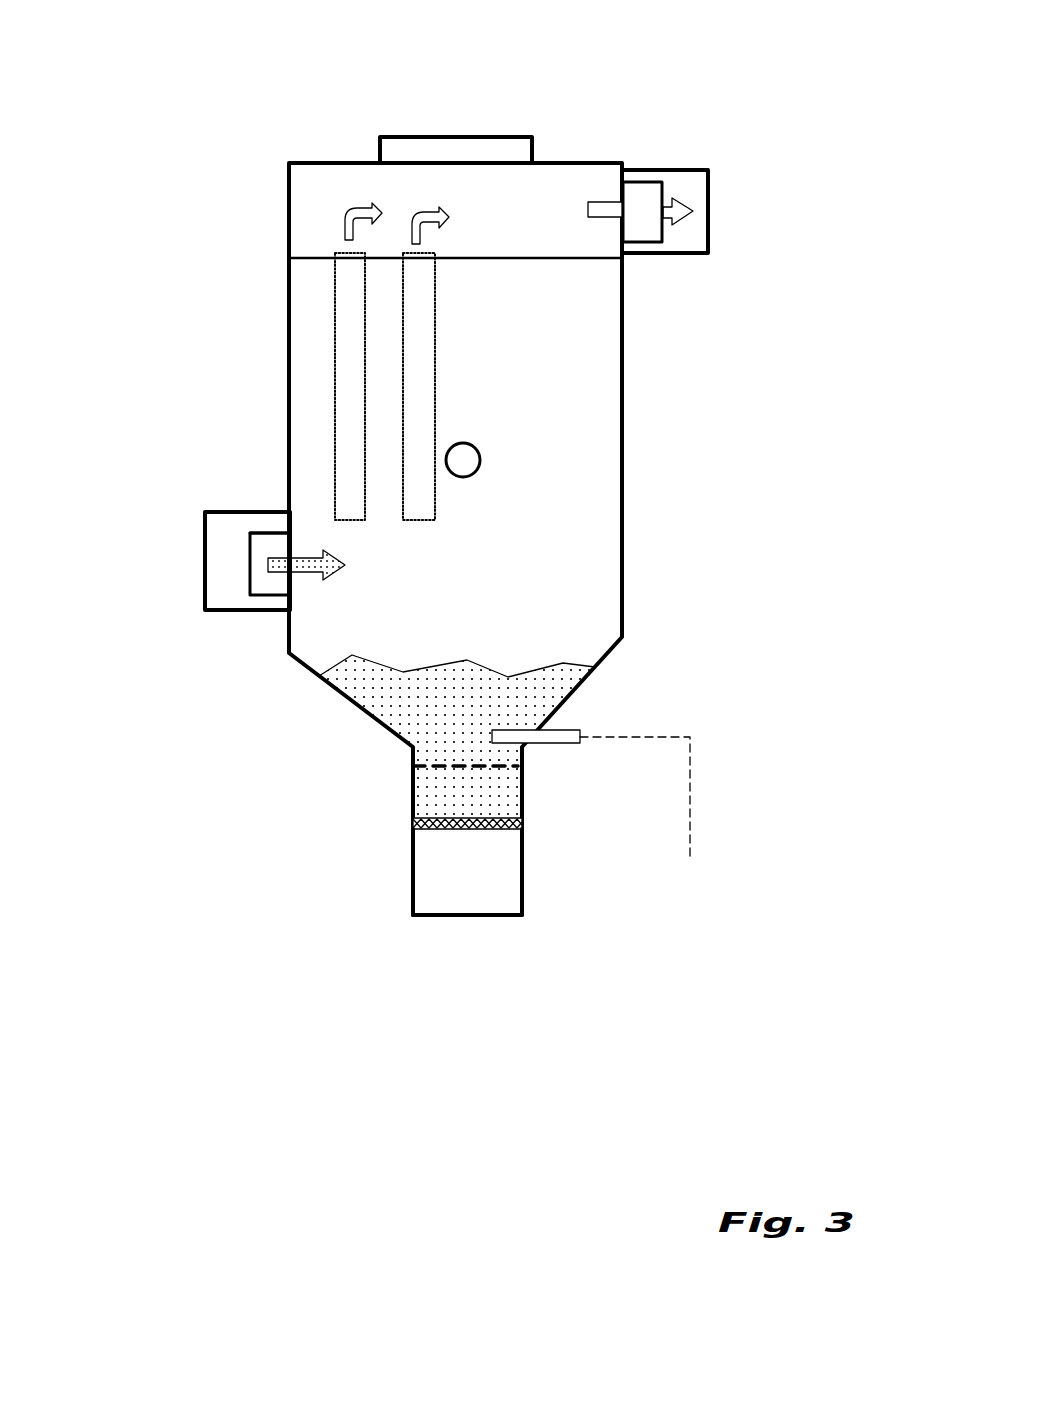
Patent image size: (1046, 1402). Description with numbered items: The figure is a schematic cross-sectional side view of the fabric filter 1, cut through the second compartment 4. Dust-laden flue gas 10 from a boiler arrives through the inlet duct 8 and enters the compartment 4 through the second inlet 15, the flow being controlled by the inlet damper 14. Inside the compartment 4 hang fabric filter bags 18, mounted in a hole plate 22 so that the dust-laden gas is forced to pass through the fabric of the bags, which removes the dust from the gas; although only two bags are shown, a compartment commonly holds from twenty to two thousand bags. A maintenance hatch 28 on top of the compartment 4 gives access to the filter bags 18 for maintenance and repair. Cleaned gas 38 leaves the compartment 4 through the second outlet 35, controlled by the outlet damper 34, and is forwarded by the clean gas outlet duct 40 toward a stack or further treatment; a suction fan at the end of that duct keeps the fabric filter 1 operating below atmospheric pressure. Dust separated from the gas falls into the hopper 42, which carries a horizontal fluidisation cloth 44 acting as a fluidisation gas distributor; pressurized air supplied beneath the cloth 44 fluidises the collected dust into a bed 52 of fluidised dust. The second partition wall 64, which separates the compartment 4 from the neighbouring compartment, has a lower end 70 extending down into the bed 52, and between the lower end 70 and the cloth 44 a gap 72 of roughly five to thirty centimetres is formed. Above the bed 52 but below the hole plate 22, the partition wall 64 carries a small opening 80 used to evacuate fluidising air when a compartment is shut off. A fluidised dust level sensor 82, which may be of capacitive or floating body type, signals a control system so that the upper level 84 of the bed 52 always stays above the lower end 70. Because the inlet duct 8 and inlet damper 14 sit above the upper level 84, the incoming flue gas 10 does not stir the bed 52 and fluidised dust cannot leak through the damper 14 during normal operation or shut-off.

The fabric filter 1 is at (399, 508).
The second compartment 4 is at (443, 571).
The inlet duct 8 is at (205, 537).
The dust-laden flue gas 10 is at (277, 567).
The inlet damper 14 is at (270, 533).
The second inlet 15 is at (287, 537).
The fabric filter bags 18 is at (335, 322).
The hole plate 22 is at (313, 257).
The maintenance hatch 28 is at (462, 137).
The outlet damper 34 is at (647, 180).
The second outlet 35 is at (618, 185).
The cleaned gas 38 is at (682, 212).
The clean gas outlet duct 40 is at (697, 168).
The hopper 42 is at (404, 805).
The fluidisation cloth 44 is at (475, 830).
The bed of fluidised dust 52 is at (398, 707).
The second partition wall 64 is at (547, 382).
The lower end 70 is at (458, 770).
The gap 72 is at (480, 792).
The opening 80 is at (476, 472).
The fluidised dust level sensor 82 is at (563, 730).
The upper level 84 is at (493, 670).